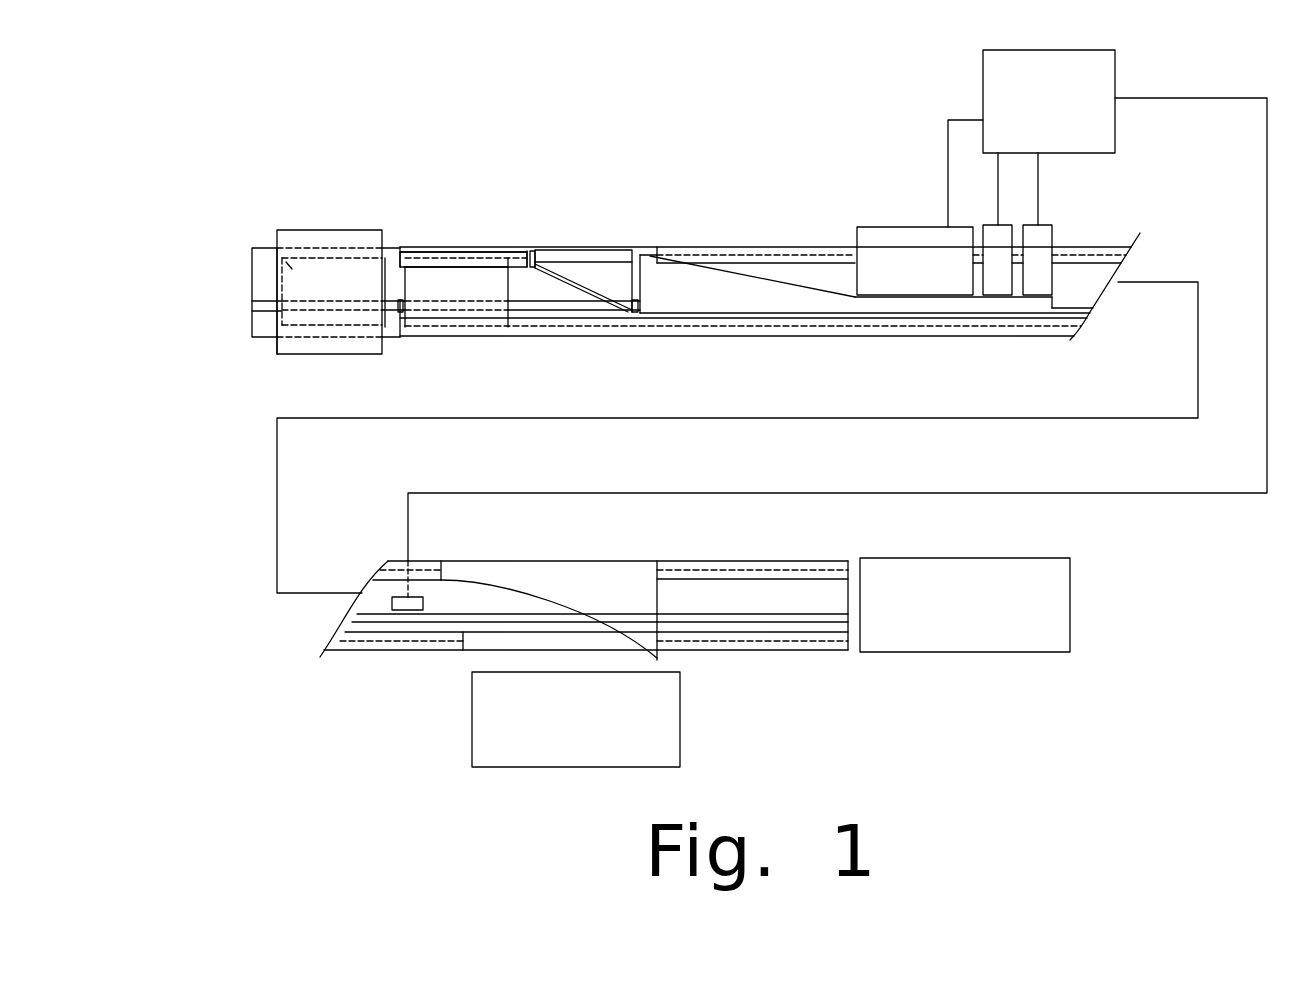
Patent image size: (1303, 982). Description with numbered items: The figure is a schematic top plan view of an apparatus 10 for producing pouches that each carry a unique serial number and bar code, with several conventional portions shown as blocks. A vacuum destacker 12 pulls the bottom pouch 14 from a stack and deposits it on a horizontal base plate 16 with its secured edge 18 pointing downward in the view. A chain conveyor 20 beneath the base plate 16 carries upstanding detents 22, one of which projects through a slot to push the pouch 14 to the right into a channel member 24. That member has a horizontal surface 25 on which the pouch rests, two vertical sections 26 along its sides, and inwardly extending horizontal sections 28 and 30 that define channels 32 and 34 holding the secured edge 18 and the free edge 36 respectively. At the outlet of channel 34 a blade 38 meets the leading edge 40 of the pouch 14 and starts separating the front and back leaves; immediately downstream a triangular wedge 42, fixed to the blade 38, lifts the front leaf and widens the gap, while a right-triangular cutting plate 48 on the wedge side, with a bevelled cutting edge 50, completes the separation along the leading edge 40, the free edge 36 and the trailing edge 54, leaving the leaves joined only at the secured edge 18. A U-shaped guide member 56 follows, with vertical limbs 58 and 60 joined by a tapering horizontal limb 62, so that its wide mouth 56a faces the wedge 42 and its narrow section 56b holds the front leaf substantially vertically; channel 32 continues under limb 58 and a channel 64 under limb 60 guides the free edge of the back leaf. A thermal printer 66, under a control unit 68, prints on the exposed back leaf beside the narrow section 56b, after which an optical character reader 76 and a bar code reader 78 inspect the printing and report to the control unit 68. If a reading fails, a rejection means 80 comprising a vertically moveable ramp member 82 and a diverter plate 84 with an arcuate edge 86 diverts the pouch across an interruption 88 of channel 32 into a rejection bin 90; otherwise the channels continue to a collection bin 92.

The apparatus 10 is at (490, 83).
The vacuum destacker 12 is at (280, 258).
The pouch 14 is at (278, 250).
The base plate 16 is at (260, 267).
The secured edge 18 is at (383, 327).
The chain conveyor 20 is at (255, 305).
The detents 22 is at (401, 312).
The channel member 24 is at (410, 250).
The horizontal surface 25 is at (518, 285).
The vertical sections 26 is at (432, 245).
The horizontal section 28 is at (458, 322).
The horizontal section 30 is at (472, 250).
The channel 32 is at (518, 325).
The channel 34 is at (515, 251).
The free edge 36 is at (382, 253).
The blade 38 is at (532, 251).
The leading edge 40 is at (382, 288).
The wedge 42 is at (575, 253).
The cutting plate 48 is at (623, 280).
The cutting edge 50 is at (573, 285).
The trailing edge 54 is at (275, 320).
The guide member 56 is at (728, 290).
The wide mouth 56a is at (641, 280).
The narrow section 56b is at (888, 303).
The vertical limb 58 is at (753, 313).
The vertical limb 60 is at (772, 280).
The horizontal limb 62 is at (865, 284).
The channel 64 is at (830, 255).
The thermal printer 66 is at (920, 207).
The control unit 68 is at (1049, 101).
The optical character reader 76 is at (997, 277).
The bar code reader 78 is at (1033, 273).
The rejection means 80 is at (443, 585).
The ramp member 82 is at (398, 597).
The diverter plate 84 is at (596, 610).
The arcuate edge 86 is at (563, 600).
The interruption 88 is at (473, 643).
The rejection bin 90 is at (576, 719).
The collection bin 92 is at (965, 605).